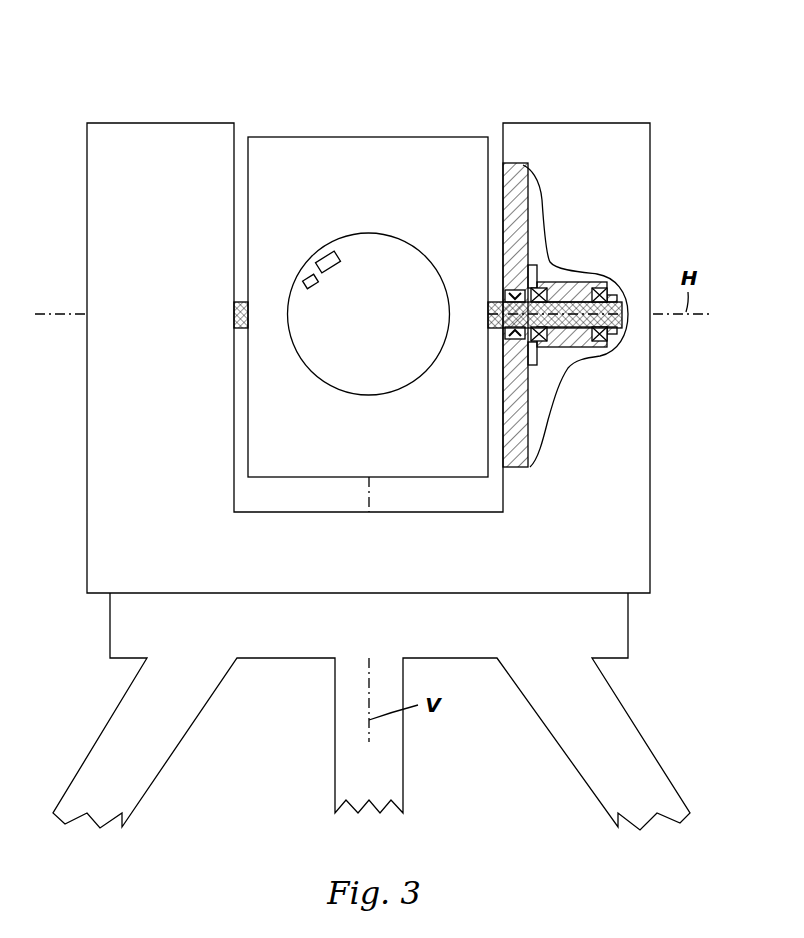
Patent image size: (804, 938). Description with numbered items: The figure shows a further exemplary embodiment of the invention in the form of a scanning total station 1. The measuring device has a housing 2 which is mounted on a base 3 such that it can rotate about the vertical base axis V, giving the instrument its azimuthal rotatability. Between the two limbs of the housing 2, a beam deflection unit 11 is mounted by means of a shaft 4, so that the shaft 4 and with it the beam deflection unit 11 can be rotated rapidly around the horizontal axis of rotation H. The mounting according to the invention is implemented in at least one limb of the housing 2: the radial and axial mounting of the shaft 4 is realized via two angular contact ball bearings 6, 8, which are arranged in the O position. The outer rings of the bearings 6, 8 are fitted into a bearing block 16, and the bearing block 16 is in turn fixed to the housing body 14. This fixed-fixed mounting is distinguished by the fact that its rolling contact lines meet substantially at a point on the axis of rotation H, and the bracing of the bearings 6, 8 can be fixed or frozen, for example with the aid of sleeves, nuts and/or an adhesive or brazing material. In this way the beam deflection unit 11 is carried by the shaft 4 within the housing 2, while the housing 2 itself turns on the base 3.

The measuring device 1 is at (258, 62).
The housing 2 is at (193, 148).
The base 3 is at (617, 634).
The shaft 4 is at (563, 335).
The bearing 6 is at (598, 275).
The bearing 8 is at (543, 283).
The beam deflection unit 11 is at (380, 152).
The housing body 14 is at (515, 178).
The bearing block 16 is at (583, 350).